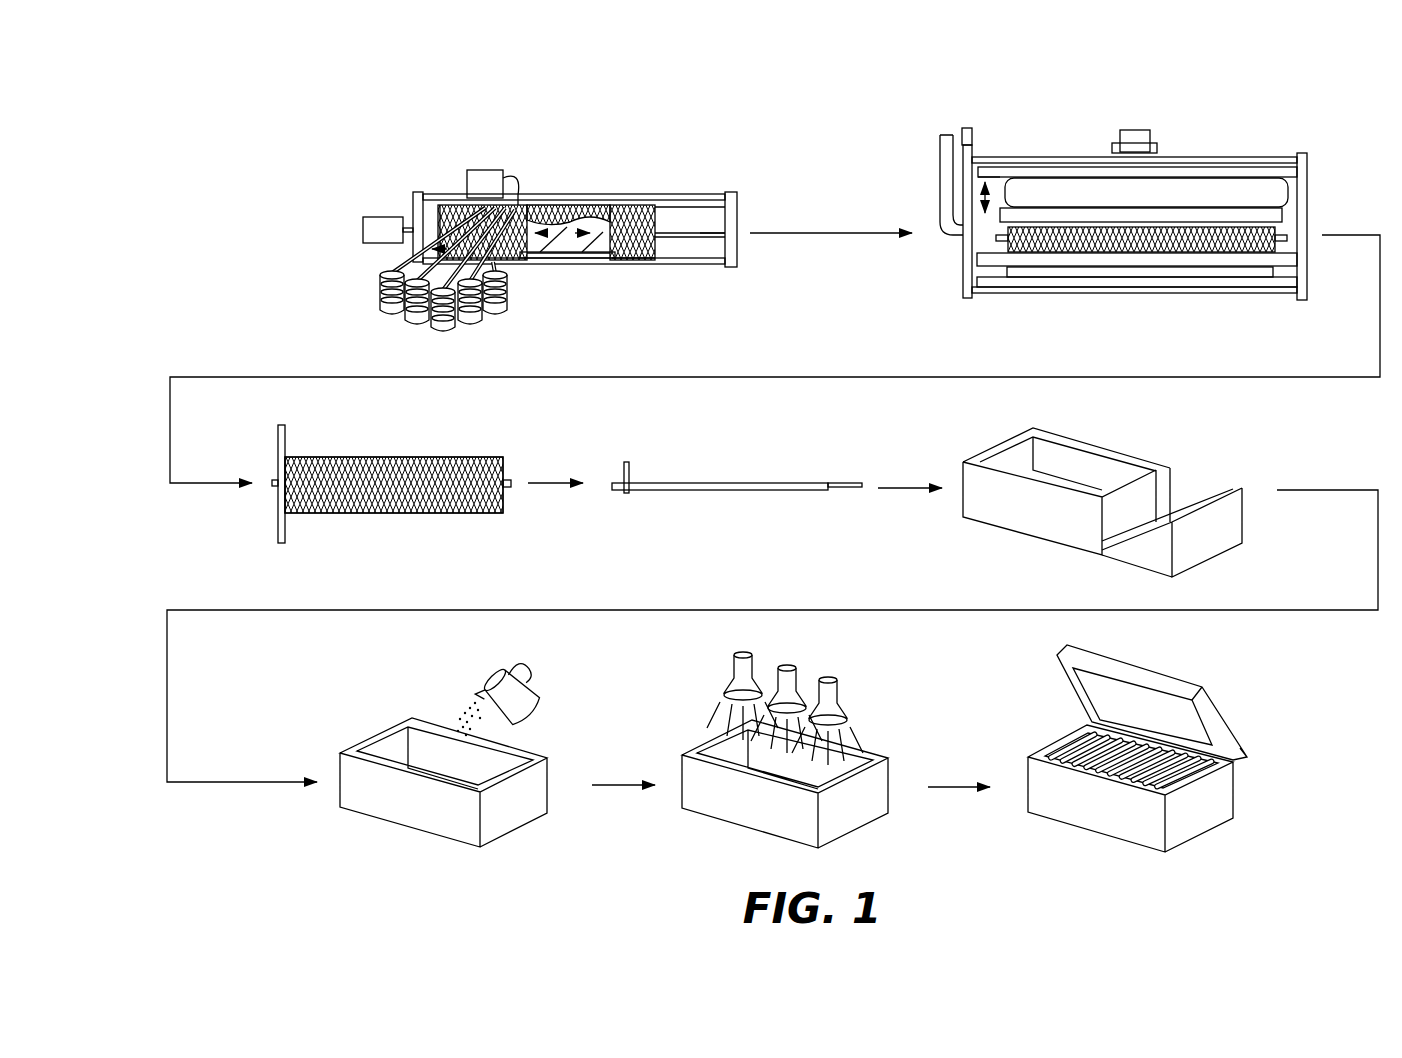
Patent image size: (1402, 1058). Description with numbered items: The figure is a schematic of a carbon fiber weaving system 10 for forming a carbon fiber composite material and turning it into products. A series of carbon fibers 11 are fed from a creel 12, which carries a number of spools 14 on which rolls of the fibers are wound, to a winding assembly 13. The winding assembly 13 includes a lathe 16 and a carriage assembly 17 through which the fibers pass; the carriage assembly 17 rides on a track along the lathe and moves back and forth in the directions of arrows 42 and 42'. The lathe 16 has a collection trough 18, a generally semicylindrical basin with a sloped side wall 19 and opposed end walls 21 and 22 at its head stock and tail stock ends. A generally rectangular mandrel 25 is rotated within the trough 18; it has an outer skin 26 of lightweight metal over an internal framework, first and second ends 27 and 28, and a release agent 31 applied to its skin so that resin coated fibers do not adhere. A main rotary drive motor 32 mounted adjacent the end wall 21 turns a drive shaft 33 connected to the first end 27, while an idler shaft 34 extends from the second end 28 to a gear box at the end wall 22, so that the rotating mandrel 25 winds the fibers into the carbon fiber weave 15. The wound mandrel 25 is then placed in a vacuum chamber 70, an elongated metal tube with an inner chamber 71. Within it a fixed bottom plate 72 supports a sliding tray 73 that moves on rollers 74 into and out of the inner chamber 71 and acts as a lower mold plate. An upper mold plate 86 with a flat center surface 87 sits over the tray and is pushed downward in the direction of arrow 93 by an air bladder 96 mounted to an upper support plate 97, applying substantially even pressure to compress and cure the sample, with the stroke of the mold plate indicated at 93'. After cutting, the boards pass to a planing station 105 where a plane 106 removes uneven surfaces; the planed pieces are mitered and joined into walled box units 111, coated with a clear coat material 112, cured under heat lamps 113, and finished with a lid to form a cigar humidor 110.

The carbon fiber weaving system 10 is at (790, 126).
The carbon fibers 11 is at (428, 252).
The creel 12 is at (395, 325).
The winding assembly 13 is at (592, 183).
The spools 14 is at (440, 332).
The carbon fiber weave 15 is at (452, 208).
The lathe 16 is at (700, 190).
The carriage assembly 17 is at (529, 180).
The collection trough 18 is at (662, 215).
The sloped side wall 19 is at (700, 260).
The end wall 21 is at (416, 200).
The end wall 22 is at (731, 225).
The mandrel 25 is at (583, 260).
The outer skin 26 is at (663, 237).
The first end 27 is at (438, 227).
The second end 28 is at (652, 263).
The release agent 31 is at (557, 256).
The main rotary drive motor 32 is at (373, 233).
The drive shaft 33 is at (407, 227).
The idler shaft 34 is at (712, 235).
The arrow 42 is at (598, 210).
The arrow 42' is at (613, 265).
The vacuum chamber 70 is at (1052, 146).
The inner chamber 71 is at (1290, 185).
The bottom plate 72 is at (1020, 282).
The sliding tray 73 is at (1113, 258).
The rollers 74 is at (1187, 272).
The upper mold plate 86 is at (1270, 215).
The center surface 87 is at (1007, 220).
The arrow 93 is at (935, 197).
The gap / stroke distance 93' is at (998, 138).
The air bladder 96 is at (1205, 193).
The upper support plate 97 is at (1088, 177).
The planing station 105 is at (410, 528).
The plane 106 is at (843, 482).
The cigar humidor 110 is at (1270, 748).
The walled box units 111 is at (1140, 445).
The clear coat material 112 is at (527, 700).
The heat lamps 113 is at (848, 700).